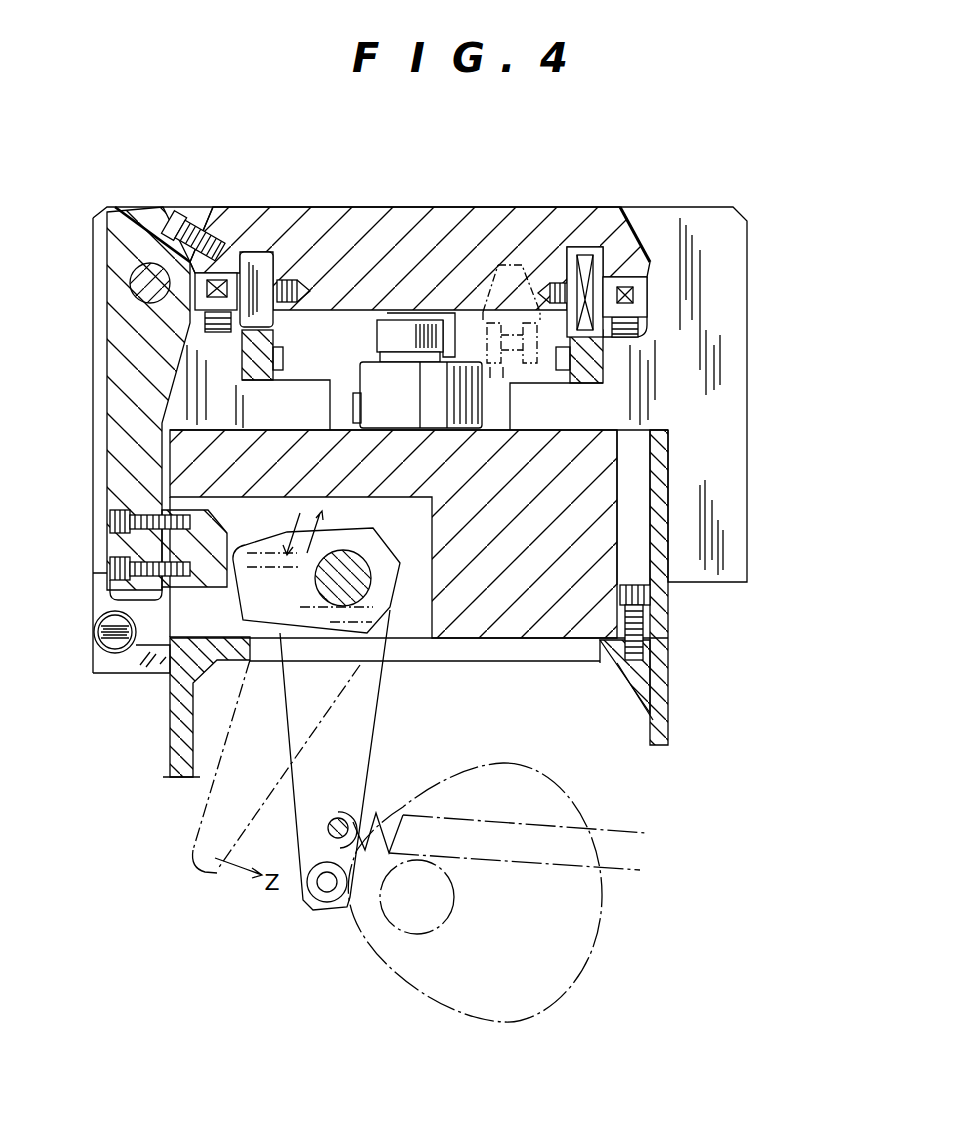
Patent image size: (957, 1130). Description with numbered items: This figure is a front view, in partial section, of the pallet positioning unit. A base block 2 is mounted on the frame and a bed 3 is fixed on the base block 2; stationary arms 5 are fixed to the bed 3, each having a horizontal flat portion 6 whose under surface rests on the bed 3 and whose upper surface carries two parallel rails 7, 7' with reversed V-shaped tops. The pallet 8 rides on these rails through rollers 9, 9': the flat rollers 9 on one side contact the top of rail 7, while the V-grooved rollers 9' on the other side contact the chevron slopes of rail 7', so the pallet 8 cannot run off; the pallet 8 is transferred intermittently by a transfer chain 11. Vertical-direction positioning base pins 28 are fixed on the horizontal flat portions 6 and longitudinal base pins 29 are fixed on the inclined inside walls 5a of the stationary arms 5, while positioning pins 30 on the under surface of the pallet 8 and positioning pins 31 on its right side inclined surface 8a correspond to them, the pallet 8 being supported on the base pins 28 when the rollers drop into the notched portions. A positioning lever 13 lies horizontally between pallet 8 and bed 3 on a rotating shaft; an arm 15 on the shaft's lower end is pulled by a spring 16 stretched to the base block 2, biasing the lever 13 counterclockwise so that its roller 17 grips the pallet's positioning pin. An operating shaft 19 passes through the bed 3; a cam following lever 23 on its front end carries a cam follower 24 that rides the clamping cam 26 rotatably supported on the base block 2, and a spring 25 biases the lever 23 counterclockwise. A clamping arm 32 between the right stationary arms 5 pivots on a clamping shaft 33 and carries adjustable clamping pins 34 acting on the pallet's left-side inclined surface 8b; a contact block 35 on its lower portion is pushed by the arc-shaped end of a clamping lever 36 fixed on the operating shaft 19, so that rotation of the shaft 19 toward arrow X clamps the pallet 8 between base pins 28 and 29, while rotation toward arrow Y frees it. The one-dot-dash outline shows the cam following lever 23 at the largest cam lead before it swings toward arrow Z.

The base block 2 is at (660, 712).
The bed 3 is at (503, 640).
The stationary arm 5 is at (735, 344).
The inclined inside wall 5a is at (626, 212).
The horizontal flat portion 6 is at (303, 425).
The rail 7 is at (286, 404).
The rail 7' is at (556, 405).
The pallet 8 is at (445, 210).
The right side inclined surface 8a is at (616, 212).
The left-side inclined surface 8b is at (223, 210).
The roller 9 is at (252, 300).
The roller 9' is at (554, 315).
The transfer chain 11 is at (513, 353).
The positioning lever 13 is at (427, 425).
The arm 15 is at (133, 670).
The spring 16 is at (95, 622).
The roller 17 is at (380, 333).
The operating shaft 19 is at (323, 597).
The cam following lever 23 is at (377, 723).
The cam follower 24 is at (303, 897).
The spring 25 is at (512, 863).
The clamping cam 26 is at (573, 957).
The positioning base pin 28 is at (217, 330).
The positioning base pin 29 is at (632, 247).
The positioning pin 30 is at (207, 323).
The positioning pin 31 is at (630, 247).
The clamping arm 32 is at (120, 360).
The clamping shaft 33 is at (137, 267).
The clamping pin 34 is at (167, 210).
The contact block 35 is at (205, 583).
The clamping lever 36 is at (243, 567).